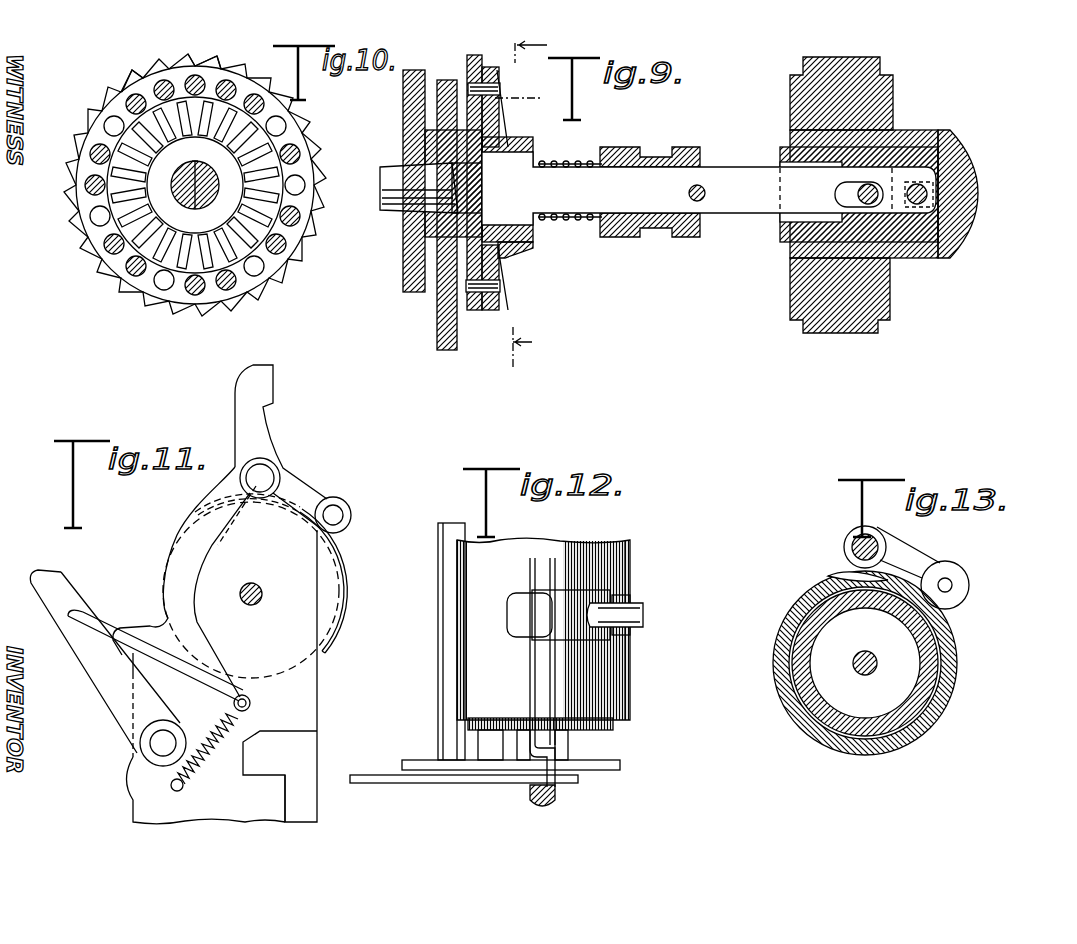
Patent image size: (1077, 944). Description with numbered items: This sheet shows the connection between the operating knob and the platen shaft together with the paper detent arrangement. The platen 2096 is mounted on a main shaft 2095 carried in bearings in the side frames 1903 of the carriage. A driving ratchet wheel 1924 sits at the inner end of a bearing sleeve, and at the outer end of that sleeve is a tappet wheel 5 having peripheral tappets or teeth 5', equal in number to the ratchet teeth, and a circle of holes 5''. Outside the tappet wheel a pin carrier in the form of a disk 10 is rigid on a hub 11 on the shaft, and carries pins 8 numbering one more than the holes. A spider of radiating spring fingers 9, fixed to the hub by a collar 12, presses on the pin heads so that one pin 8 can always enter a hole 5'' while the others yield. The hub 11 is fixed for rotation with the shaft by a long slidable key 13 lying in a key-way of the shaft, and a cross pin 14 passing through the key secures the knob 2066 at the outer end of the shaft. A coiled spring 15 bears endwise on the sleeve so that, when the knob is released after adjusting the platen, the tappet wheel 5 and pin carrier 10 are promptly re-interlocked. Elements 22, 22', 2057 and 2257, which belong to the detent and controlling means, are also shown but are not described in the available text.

In FIG. 10, the tappet wheel 5 is at (195, 185).
In FIG. 9, the tappet wheel 5 is at (486, 176).
In FIG. 10, the peripheral tappets or teeth 5' is at (146, 63).
In FIG. 9, the peripheral tappets or teeth 5' is at (473, 342).
In FIG. 10, the holes 5'' is at (269, 171).
In FIG. 9, the holes 5'' is at (482, 331).
In FIG. 10, the pins 8 is at (197, 75).
In FIG. 9, the pins 8 is at (497, 81).
In FIG. 10, the spring fingers 9 is at (243, 97).
In FIG. 9, the spring fingers 9 is at (513, 112).
In FIG. 10, the pin carrier disk 10 is at (270, 270).
In FIG. 9, the pin carrier disk 10 is at (531, 204).
In FIG. 9, the hub 11 is at (513, 257).
In FIG. 9, the collar 12 is at (523, 138).
In FIG. 10, the key 13 is at (193, 163).
In FIG. 9, the key 13 is at (752, 200).
In FIG. 9, the cross pin 14 is at (928, 193).
In FIG. 9, the coiled spring 15 is at (565, 155).
In FIG. 9, the collar 22 is at (650, 180).
In FIG. 9, the collar pin 22' is at (718, 173).
In FIG. 9, the side frames 1903 is at (437, 346).
In FIG. 11, the side frames 1903 is at (132, 769).
In FIG. 12, the side frames 1903 is at (618, 765).
In FIG. 9, the ratchet wheel 1924 is at (413, 293).
In FIG. 9, the knob 2066 is at (873, 99).
In FIG. 10, the main shaft 2095 is at (217, 200).
In FIG. 9, the main shaft 2095 is at (395, 170).
In FIG. 11, the main shaft 2095 is at (258, 581).
In FIG. 12, the main shaft 2095 is at (555, 793).
In FIG. 13, the main shaft 2095 is at (855, 673).
In FIG. 11, the platen 2096 is at (320, 651).
In FIG. 12, the platen 2096 is at (607, 566).
In FIG. 13, the platen 2096 is at (912, 730).
In FIG. 12, the roller 2057 is at (643, 613).
In FIG. 13, the roller 2057 is at (962, 577).
In FIG. 11, the band lever roller 2257 is at (350, 500).